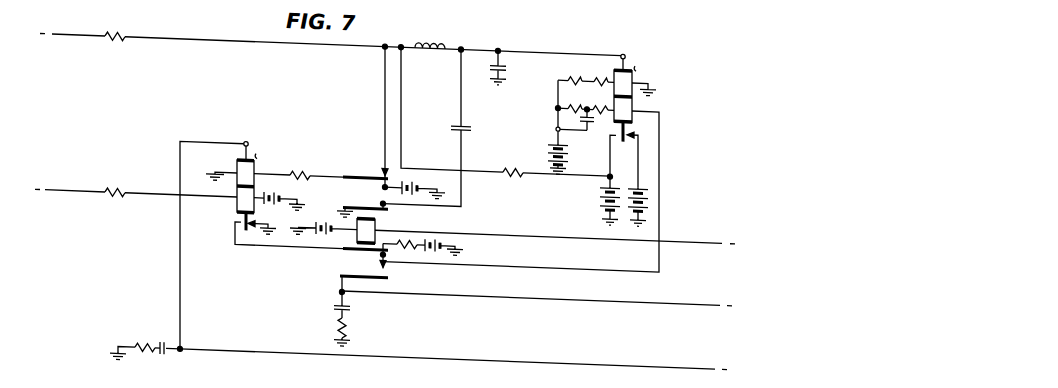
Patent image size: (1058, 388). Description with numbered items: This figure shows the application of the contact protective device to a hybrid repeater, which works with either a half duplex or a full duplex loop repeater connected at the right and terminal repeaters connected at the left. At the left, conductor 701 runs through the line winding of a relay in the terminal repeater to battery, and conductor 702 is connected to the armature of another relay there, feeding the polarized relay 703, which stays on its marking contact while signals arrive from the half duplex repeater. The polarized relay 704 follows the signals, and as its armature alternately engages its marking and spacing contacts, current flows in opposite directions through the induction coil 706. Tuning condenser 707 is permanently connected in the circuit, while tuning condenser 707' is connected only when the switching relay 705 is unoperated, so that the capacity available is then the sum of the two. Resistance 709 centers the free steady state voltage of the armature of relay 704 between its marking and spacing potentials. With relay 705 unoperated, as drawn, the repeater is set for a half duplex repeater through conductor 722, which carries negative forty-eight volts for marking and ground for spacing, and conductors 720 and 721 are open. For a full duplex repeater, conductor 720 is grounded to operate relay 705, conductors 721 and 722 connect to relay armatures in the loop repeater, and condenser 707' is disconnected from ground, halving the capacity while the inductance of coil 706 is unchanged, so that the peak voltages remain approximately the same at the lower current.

The conductor 701 is at (94, 34).
The conductor 702 is at (86, 186).
The relay 703 is at (237, 150).
The relay 704 is at (634, 75).
The switching relay 705 is at (377, 211).
The induction coil 706 is at (410, 38).
The tuning condenser 707 is at (514, 69).
The tuning condenser 707' is at (481, 135).
The resistance 709 is at (510, 155).
The conductor 720 is at (713, 220).
The conductor 721 is at (703, 281).
The conductor 722 is at (704, 345).